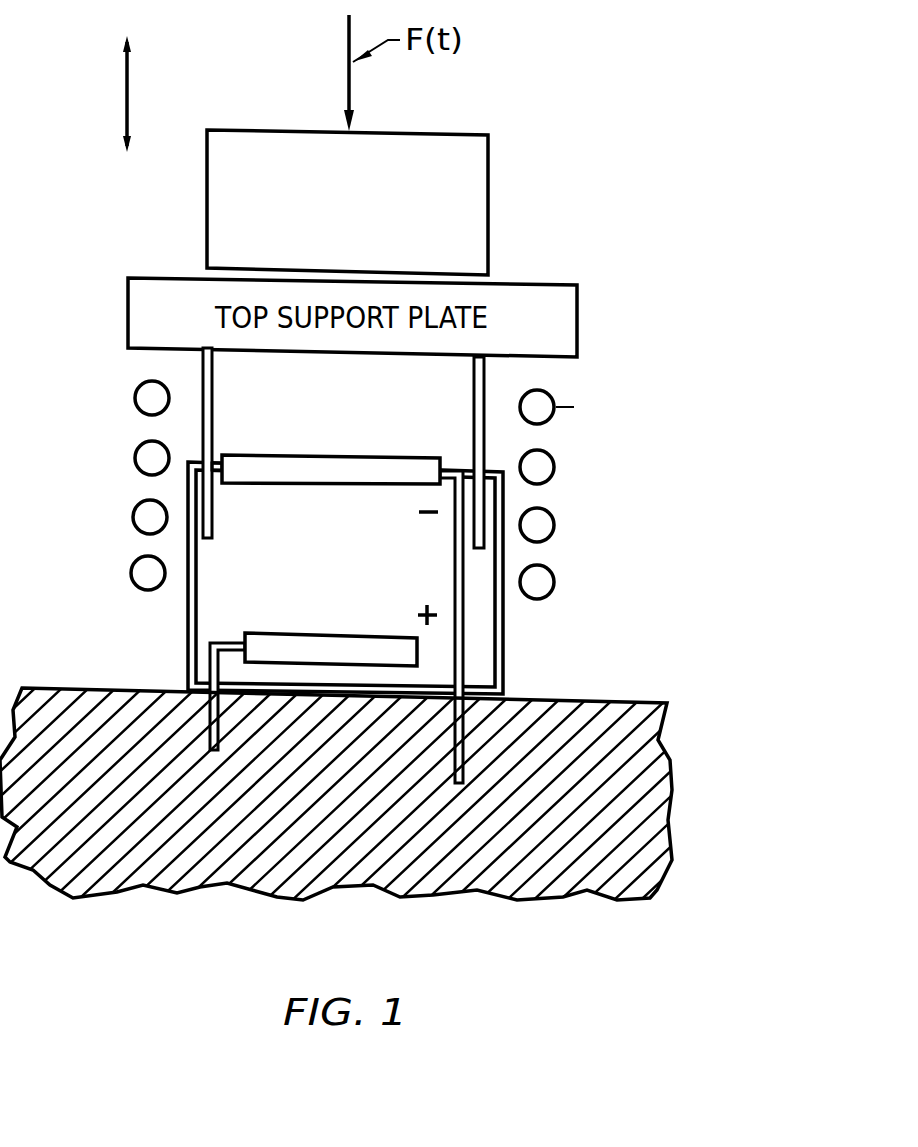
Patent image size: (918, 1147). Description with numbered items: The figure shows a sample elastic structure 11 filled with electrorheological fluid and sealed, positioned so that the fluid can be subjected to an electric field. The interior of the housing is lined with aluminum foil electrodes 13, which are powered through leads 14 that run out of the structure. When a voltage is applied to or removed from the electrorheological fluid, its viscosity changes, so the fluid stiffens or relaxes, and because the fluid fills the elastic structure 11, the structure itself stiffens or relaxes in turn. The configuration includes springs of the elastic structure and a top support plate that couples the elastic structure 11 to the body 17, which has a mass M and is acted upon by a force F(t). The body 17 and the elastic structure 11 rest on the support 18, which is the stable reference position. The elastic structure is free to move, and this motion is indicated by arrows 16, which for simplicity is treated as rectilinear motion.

The elastic structure 11 is at (122, 516).
The aluminum foil electrodes 13 is at (331, 531).
The leads 14 is at (406, 715).
The arrows 16 is at (142, 94).
The body 17 is at (388, 202).
The support 18 is at (451, 800).